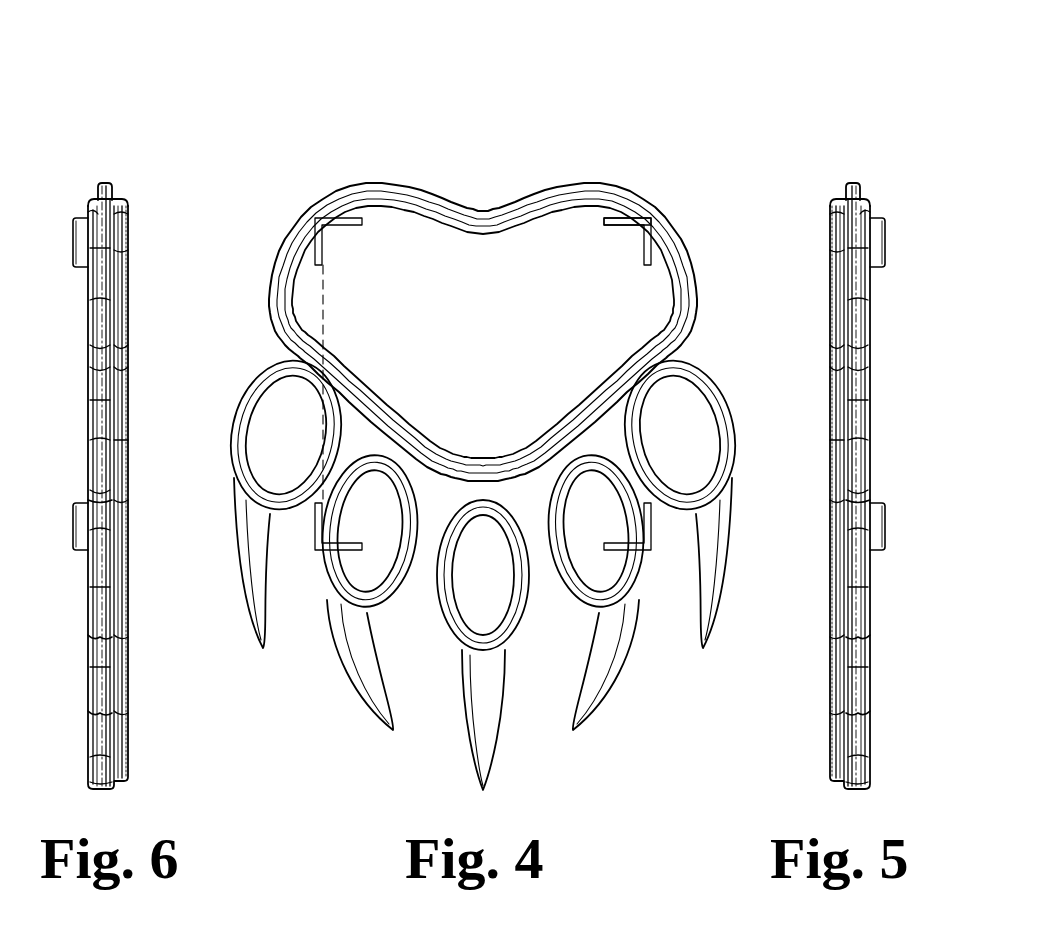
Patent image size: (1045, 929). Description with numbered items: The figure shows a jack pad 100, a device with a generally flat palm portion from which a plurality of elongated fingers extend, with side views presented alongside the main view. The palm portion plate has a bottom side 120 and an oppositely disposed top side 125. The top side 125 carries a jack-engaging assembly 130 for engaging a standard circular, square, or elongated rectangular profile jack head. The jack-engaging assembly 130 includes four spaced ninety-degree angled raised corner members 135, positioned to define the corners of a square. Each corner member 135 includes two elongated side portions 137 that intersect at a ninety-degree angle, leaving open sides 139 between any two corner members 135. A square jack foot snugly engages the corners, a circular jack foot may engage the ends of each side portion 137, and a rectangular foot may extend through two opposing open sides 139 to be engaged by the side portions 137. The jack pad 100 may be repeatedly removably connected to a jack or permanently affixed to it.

In FIG. 4, the jack pad 100 is at (496, 100).
In FIG. 6, the jack pad 100 is at (105, 401).
In FIG. 5, the jack pad 100 is at (856, 401).
In FIG. 6, the bottom side 120 is at (146, 312).
In FIG. 5, the bottom side 120 is at (822, 312).
In FIG. 4, the top side 125 is at (722, 388).
In FIG. 6, the top side 125 is at (70, 345).
In FIG. 5, the top side 125 is at (884, 345).
In FIG. 4, the jack-engaging assembly 130 is at (297, 190).
In FIG. 4, the raised corner member 135 is at (306, 254).
In FIG. 6, the raised corner member 135 is at (80, 384).
In FIG. 5, the raised corner member 135 is at (884, 240).
In FIG. 4, the elongated side portion 137 is at (613, 223).
In FIG. 4, the open side 139 is at (273, 330).